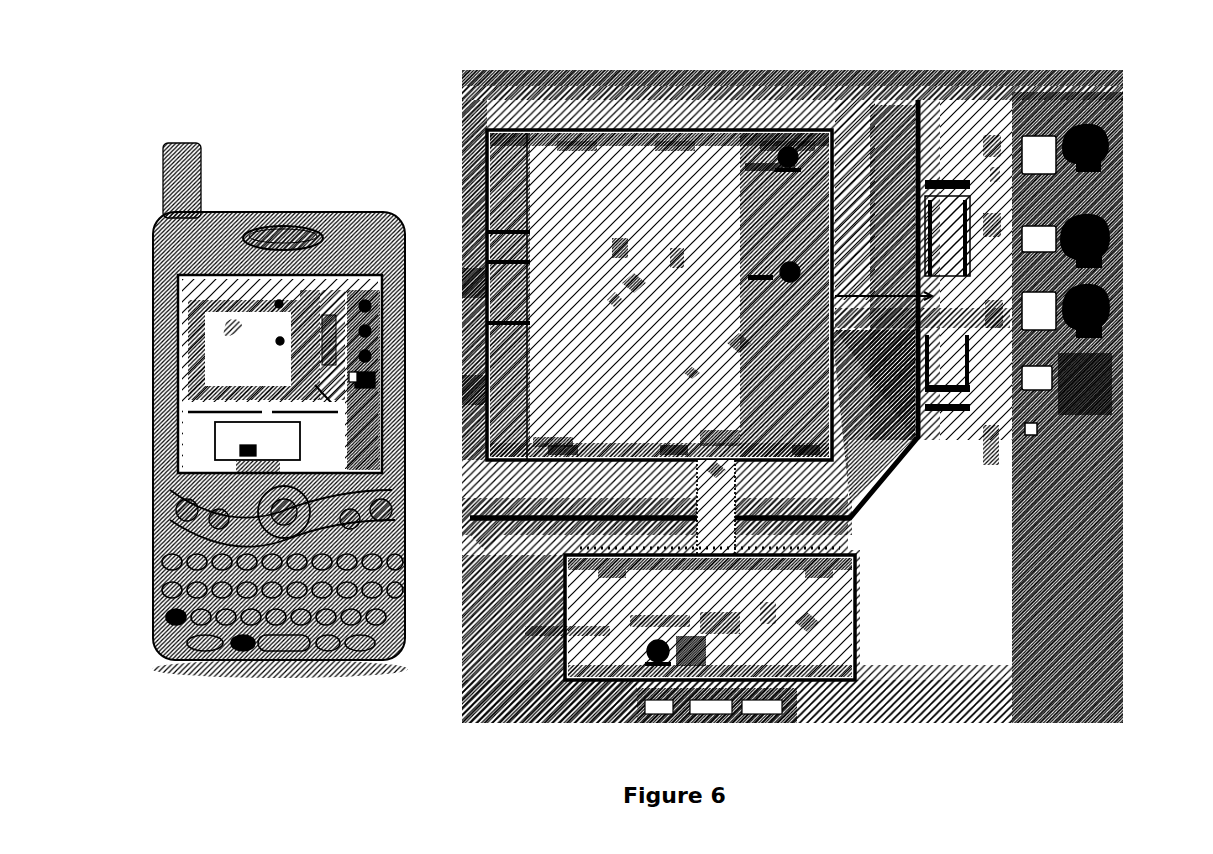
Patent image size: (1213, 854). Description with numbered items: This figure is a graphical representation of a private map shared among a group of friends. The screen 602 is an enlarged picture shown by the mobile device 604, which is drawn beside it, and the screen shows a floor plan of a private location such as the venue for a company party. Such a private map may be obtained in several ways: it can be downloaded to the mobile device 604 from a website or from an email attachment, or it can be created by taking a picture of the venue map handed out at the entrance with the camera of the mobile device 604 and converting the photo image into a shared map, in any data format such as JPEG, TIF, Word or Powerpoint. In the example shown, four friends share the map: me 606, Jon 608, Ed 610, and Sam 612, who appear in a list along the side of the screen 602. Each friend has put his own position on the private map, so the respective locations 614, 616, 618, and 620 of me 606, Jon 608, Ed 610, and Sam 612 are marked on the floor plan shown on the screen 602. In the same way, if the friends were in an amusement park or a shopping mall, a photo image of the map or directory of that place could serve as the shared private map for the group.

The screen 602 is at (828, 403).
The mobile device 604 is at (283, 205).
The me 606 is at (1126, 146).
The Jon 608 is at (1126, 240).
The Ed 610 is at (1126, 312).
The Sam 612 is at (1126, 385).
The location 614 is at (793, 262).
The location 616 is at (788, 146).
The location 618 is at (645, 660).
The location 620 is at (668, 724).